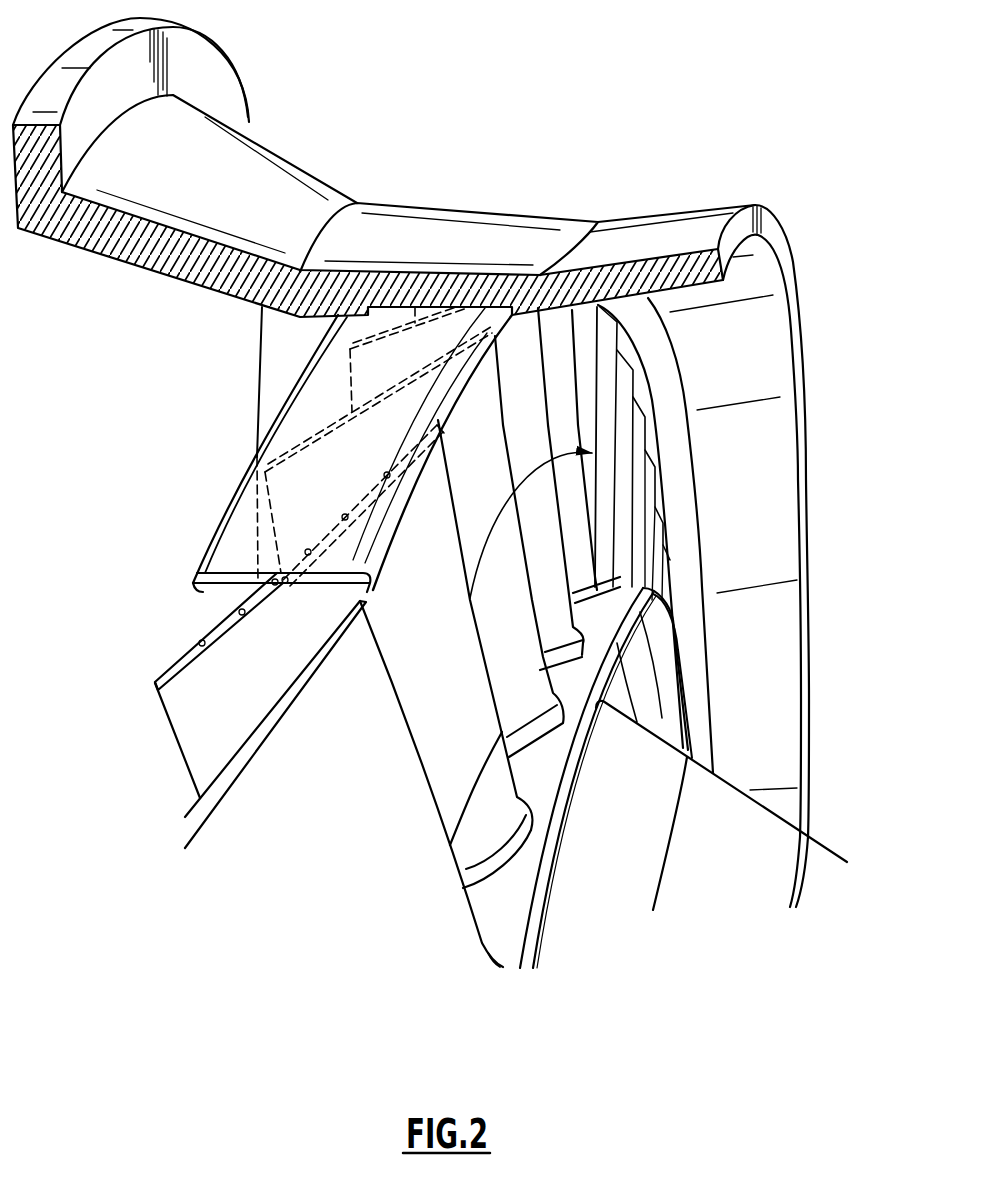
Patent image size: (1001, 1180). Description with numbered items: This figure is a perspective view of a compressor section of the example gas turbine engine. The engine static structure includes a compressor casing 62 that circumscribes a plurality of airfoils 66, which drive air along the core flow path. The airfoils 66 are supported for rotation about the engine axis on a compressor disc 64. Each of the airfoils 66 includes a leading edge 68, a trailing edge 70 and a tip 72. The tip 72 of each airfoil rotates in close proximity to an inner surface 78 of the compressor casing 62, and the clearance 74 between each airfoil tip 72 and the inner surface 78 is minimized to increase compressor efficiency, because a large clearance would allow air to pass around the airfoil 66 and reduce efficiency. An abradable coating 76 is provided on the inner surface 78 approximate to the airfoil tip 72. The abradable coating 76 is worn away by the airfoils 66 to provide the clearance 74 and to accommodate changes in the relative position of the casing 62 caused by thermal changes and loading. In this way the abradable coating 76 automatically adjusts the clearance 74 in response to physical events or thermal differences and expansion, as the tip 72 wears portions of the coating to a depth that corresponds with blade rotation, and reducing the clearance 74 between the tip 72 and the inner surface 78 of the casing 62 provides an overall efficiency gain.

The compressor casing 62 is at (427, 230).
The compressor disc 64 is at (550, 913).
The airfoils 66 is at (438, 660).
The leading edge 68 is at (447, 843).
The trailing edge 70 is at (170, 756).
The tip 72 is at (223, 627).
The clearance 74 is at (286, 596).
The abradable coating 76 is at (222, 535).
The inner surface 78 is at (233, 302).